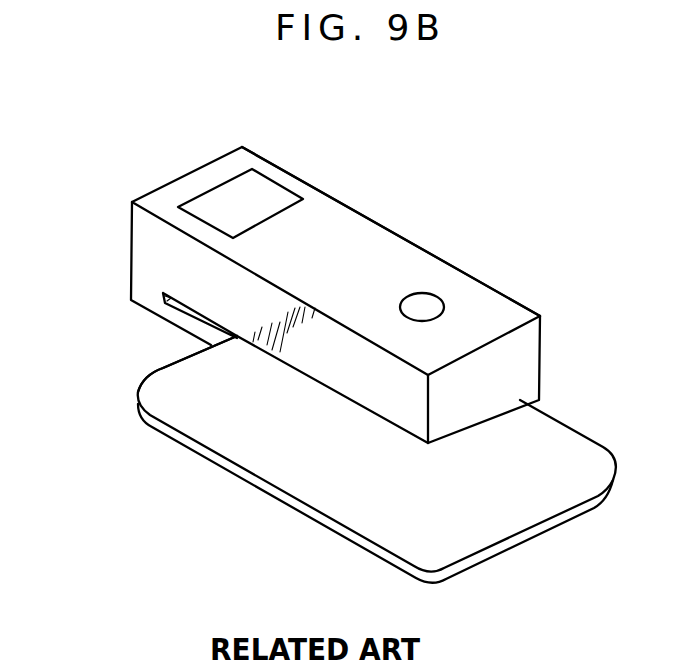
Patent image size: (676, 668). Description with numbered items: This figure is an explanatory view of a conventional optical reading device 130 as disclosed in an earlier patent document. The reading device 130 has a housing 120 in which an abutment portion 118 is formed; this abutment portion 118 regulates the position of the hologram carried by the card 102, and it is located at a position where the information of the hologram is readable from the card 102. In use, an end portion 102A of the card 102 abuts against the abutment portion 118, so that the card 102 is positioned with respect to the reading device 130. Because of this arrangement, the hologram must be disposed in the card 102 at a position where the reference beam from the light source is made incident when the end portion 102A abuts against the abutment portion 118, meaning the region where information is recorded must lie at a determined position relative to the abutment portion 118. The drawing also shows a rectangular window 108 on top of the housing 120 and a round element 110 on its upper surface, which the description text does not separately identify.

The card 102 is at (565, 447).
The end portion of the card 102A is at (163, 368).
The window 108 is at (263, 188).
The button 110 is at (425, 302).
The abutment portion 118 is at (174, 308).
The housing 120 is at (143, 257).
The reading device 130 is at (392, 222).